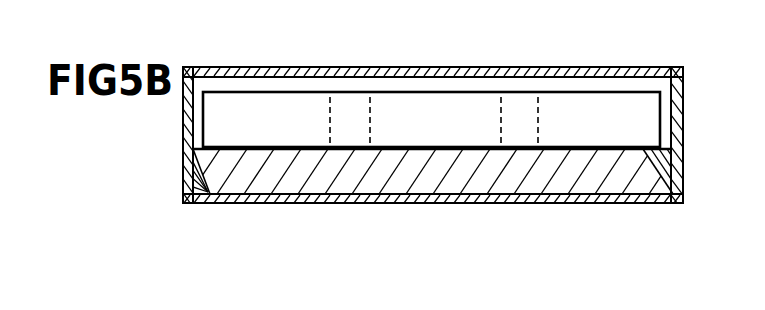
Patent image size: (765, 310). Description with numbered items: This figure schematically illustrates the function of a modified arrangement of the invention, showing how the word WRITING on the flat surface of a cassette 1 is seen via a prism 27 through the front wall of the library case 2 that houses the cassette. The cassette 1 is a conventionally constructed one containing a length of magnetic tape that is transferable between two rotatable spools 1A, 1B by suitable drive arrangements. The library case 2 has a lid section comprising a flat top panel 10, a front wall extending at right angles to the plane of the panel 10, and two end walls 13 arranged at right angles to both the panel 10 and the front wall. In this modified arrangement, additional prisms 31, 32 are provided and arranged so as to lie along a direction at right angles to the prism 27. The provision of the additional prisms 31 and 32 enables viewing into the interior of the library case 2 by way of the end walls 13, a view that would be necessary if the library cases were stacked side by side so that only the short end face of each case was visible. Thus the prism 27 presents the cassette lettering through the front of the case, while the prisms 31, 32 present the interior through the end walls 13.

The cassette 1 is at (431, 119).
The rotatable spool 1A is at (345, 110).
The rotatable spool 1B is at (520, 108).
The library case 2 is at (122, 162).
The flat top panel 10 is at (444, 60).
The end walls 13 is at (176, 113).
The prism 27 is at (278, 173).
The additional prism 31 is at (675, 200).
The additional prism 32 is at (186, 170).